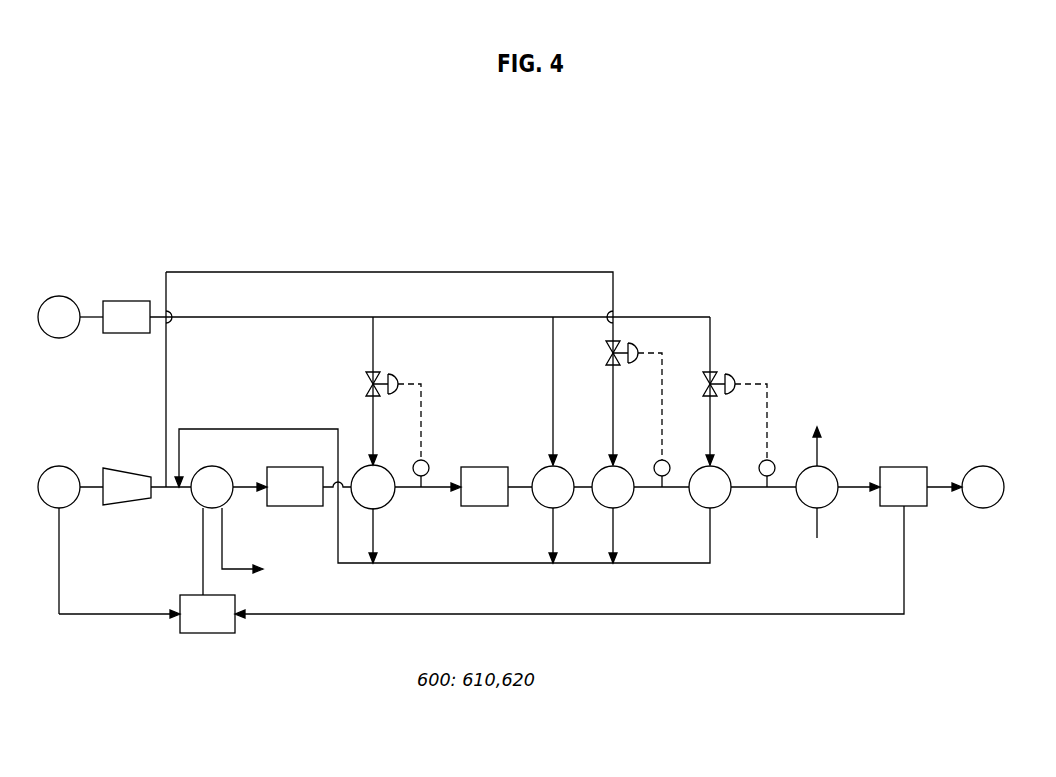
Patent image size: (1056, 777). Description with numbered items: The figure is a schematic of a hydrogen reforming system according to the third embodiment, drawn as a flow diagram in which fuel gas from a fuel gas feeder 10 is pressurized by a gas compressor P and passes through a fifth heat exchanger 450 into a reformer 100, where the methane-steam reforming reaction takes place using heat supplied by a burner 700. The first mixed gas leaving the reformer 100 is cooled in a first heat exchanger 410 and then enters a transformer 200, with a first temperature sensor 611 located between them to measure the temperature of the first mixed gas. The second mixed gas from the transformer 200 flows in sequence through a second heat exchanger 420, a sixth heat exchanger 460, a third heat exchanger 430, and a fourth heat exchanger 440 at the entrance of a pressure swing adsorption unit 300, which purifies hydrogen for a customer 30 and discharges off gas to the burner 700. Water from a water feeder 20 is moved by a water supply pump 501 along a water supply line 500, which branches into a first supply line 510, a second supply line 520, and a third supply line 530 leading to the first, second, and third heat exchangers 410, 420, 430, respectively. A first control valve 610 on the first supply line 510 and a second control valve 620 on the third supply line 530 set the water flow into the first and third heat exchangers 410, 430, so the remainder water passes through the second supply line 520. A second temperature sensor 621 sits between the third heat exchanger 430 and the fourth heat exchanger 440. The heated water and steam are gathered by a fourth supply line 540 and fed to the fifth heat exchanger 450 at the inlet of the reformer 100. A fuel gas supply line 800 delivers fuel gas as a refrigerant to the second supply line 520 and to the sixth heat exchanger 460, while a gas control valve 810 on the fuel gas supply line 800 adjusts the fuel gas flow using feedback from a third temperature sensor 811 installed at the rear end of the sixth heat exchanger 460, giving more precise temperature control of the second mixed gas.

The fuel gas feeder 10 is at (59, 466).
The water feeder 20 is at (59, 295).
The customer 30 is at (985, 466).
The gas compressor P is at (125, 468).
The reformer 100 is at (300, 506).
The transformer 200 is at (490, 467).
The pressure swing adsorption (PSA) unit 300 is at (904, 467).
The first heat exchanger 410 is at (389, 501).
The second heat exchanger 420 is at (538, 503).
The third heat exchanger 430 is at (724, 503).
The fourth heat exchanger 440 is at (833, 503).
The fifth heat exchanger 450 is at (196, 502).
The sixth heat exchanger 460 is at (626, 503).
The water supply line 500 is at (321, 307).
The water supply pump 501 is at (118, 300).
The first supply line 510 is at (375, 342).
The second supply line 520 is at (552, 348).
The third supply line 530 is at (712, 340).
The fourth supply line 540 is at (232, 428).
The first control valve 610 is at (366, 386).
The first temperature sensor 611 is at (424, 460).
The second control valve 620 is at (714, 372).
The second temperature sensor 621 is at (770, 460).
The burner 700 is at (207, 634).
The fuel gas supply line 800 is at (446, 262).
The gas control valve 810 is at (618, 339).
The third temperature sensor 811 is at (660, 460).